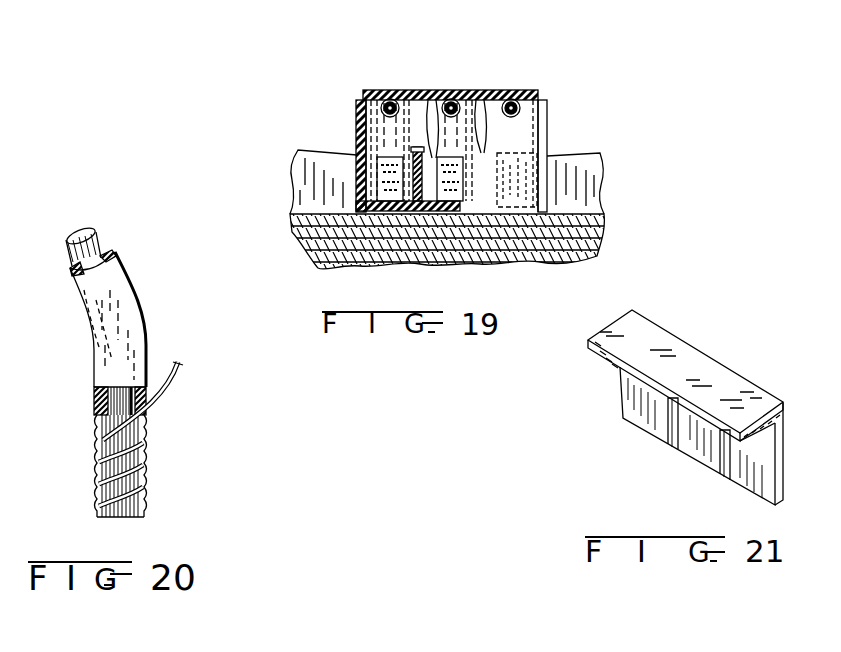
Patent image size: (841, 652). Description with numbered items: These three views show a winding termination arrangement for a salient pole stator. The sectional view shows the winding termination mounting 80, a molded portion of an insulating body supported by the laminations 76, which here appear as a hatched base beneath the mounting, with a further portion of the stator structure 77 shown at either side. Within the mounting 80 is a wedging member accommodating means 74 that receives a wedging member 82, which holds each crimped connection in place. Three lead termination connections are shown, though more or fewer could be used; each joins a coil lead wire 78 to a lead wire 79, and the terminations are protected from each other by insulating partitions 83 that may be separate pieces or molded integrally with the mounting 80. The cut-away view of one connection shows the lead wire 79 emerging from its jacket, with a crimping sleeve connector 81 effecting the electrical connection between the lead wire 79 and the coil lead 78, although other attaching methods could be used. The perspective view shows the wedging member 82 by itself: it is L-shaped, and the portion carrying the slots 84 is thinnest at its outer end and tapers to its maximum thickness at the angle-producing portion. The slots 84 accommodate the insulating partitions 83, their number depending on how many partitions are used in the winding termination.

In FIG. 19, the wedging member accommodating means 74 is at (382, 205).
In FIG. 19, the laminations 76 is at (593, 240).
In FIG. 19, the housing block 77 is at (607, 162).
In FIG. 19, the coil lead wire 78 is at (361, 108).
In FIG. 20, the coil lead wire 78 is at (181, 380).
In FIG. 19, the lead wire 79 is at (387, 129).
In FIG. 20, the lead wire 79 is at (140, 290).
In FIG. 19, the winding termination mounting 80 is at (548, 104).
In FIG. 19, the crimping sleeve connector 81 is at (387, 177).
In FIG. 20, the crimping sleeve connector 81 is at (143, 456).
In FIG. 19, the wedging member 82 is at (397, 97).
In FIG. 21, the wedging member 82 is at (670, 350).
In FIG. 19, the insulating partitions 83 is at (421, 110).
In FIG. 21, the slots 84 is at (676, 443).